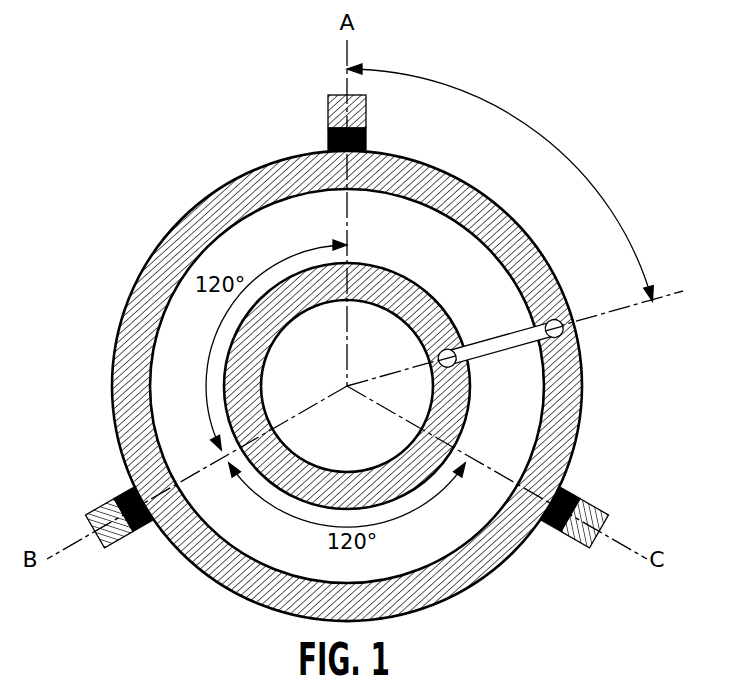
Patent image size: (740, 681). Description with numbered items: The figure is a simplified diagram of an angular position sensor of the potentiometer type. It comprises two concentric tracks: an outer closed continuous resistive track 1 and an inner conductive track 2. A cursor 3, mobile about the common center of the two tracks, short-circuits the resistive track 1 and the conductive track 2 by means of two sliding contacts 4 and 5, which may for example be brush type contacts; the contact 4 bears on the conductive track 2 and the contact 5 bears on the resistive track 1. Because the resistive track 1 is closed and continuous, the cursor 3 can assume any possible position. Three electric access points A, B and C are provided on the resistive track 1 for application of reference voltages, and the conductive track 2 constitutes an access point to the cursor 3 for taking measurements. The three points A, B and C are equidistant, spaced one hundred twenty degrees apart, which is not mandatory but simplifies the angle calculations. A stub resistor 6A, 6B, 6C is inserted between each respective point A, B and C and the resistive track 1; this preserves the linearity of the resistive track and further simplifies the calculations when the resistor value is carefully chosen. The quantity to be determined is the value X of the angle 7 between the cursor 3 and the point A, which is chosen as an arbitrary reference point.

The resistive track 1 is at (145, 295).
The conductive track 2 is at (335, 446).
The cursor 3 is at (491, 348).
The sliding contact 4 is at (455, 348).
The sliding contact 5 is at (566, 332).
The stub resistor 6A is at (328, 137).
The stub resistor 6B is at (120, 500).
The stub resistor 6C is at (553, 520).
The angle 7 is at (557, 120).